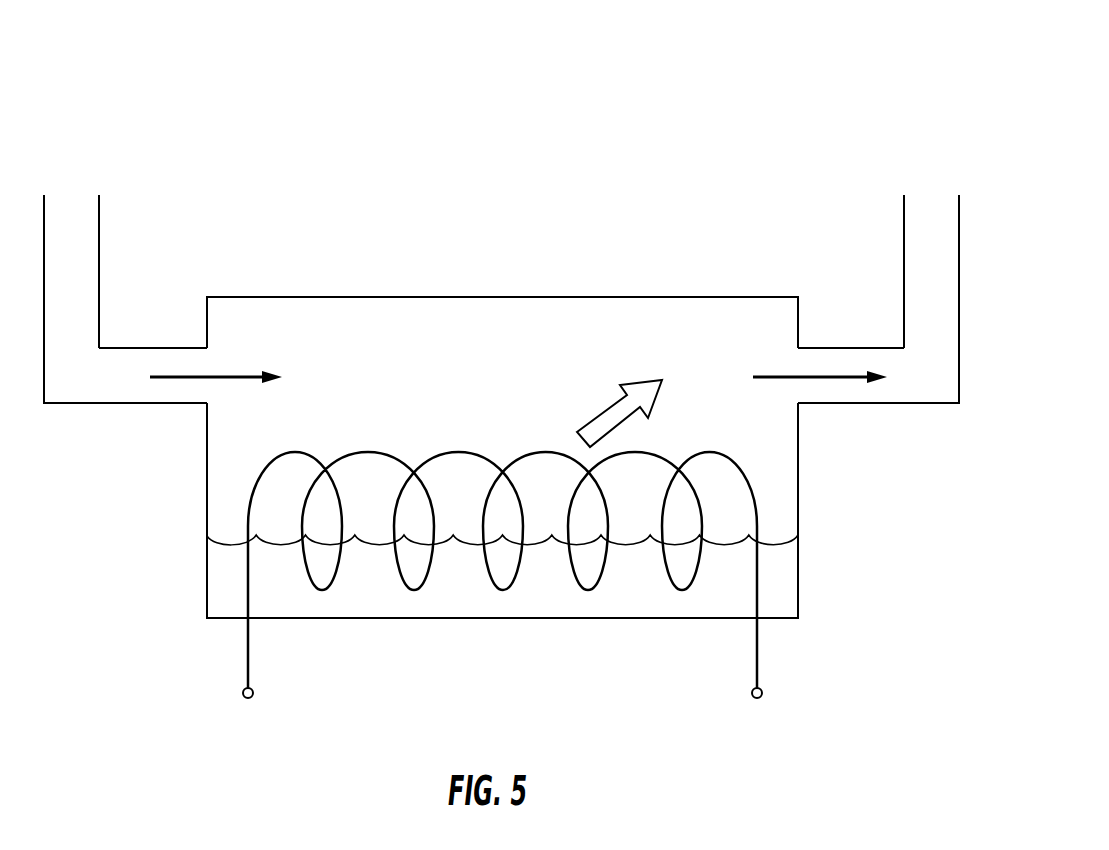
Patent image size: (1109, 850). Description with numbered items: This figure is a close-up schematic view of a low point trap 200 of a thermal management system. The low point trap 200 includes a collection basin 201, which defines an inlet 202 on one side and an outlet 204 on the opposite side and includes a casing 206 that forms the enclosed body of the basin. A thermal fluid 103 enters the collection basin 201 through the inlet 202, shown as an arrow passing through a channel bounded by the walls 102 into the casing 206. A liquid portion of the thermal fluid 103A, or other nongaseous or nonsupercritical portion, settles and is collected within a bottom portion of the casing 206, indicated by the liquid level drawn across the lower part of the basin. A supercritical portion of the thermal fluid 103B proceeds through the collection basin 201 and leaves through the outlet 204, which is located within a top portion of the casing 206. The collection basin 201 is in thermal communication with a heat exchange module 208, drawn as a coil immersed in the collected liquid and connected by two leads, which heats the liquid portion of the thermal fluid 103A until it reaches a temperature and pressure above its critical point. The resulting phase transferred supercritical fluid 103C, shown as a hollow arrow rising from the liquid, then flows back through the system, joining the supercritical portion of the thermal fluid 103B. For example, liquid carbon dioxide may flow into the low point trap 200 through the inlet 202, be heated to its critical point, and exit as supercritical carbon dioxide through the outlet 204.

The low point trap 200 is at (742, 78).
The outer wall / conduit wall 102 is at (99, 235).
The collection basin 201 is at (652, 247).
The casing 206 is at (410, 297).
The inlet 202 is at (168, 362).
The outlet 204 is at (835, 392).
The thermal fluid 103 is at (180, 378).
The liquid portion of the thermal fluid 103A is at (775, 574).
The supercritical portion of the thermal fluid 103B is at (818, 377).
The phase transferred supercritical fluid 103C is at (605, 420).
The heat exchange module 208 is at (413, 593).